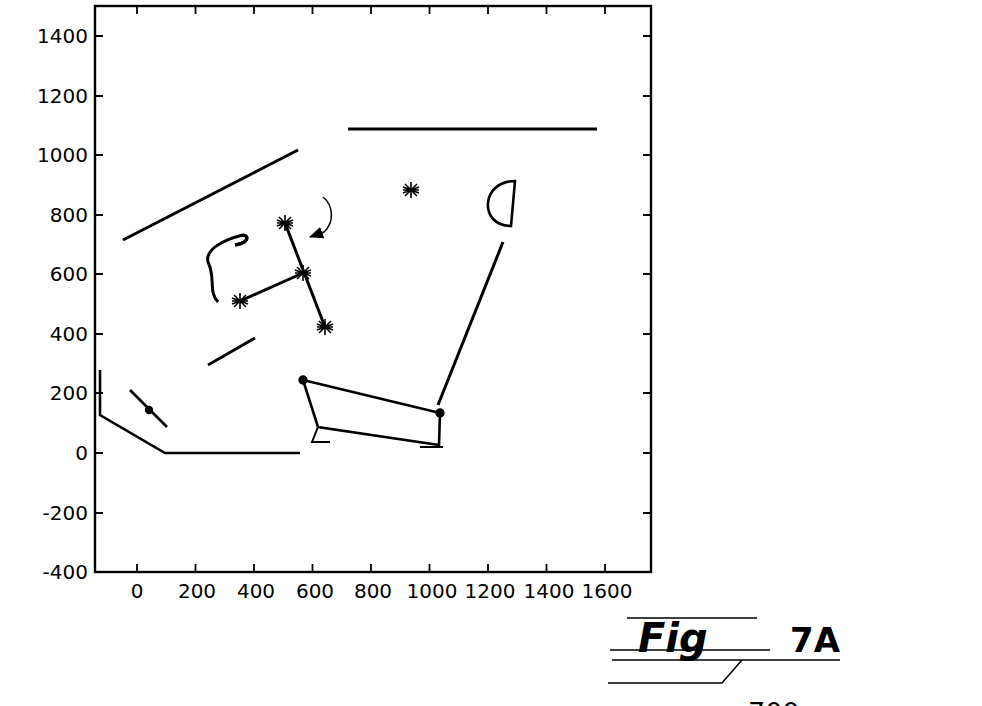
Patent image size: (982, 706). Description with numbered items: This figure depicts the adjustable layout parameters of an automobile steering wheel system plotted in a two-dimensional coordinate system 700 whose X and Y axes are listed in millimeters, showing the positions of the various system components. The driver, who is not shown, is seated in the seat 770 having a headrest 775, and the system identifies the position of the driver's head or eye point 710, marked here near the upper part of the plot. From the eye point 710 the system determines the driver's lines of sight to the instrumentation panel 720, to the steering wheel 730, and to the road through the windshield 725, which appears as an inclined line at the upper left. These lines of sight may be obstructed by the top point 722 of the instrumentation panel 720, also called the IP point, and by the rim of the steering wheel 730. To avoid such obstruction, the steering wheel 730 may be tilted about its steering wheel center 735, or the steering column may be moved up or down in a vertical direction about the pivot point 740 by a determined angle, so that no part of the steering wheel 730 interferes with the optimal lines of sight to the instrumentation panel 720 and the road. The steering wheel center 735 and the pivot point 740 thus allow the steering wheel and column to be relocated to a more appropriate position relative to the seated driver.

The two-dimensional coordinate system 700 is at (690, 82).
The eye point 710 is at (430, 203).
The instrumentation panel 720 is at (243, 262).
The top point of the instrumentation panel 722 is at (245, 218).
The windshield 725 is at (181, 197).
The steering wheel 730 is at (280, 202).
The steering wheel center 735 is at (326, 258).
The pivot point 740 is at (218, 320).
The seat 770 is at (470, 341).
The headrest 775 is at (510, 208).